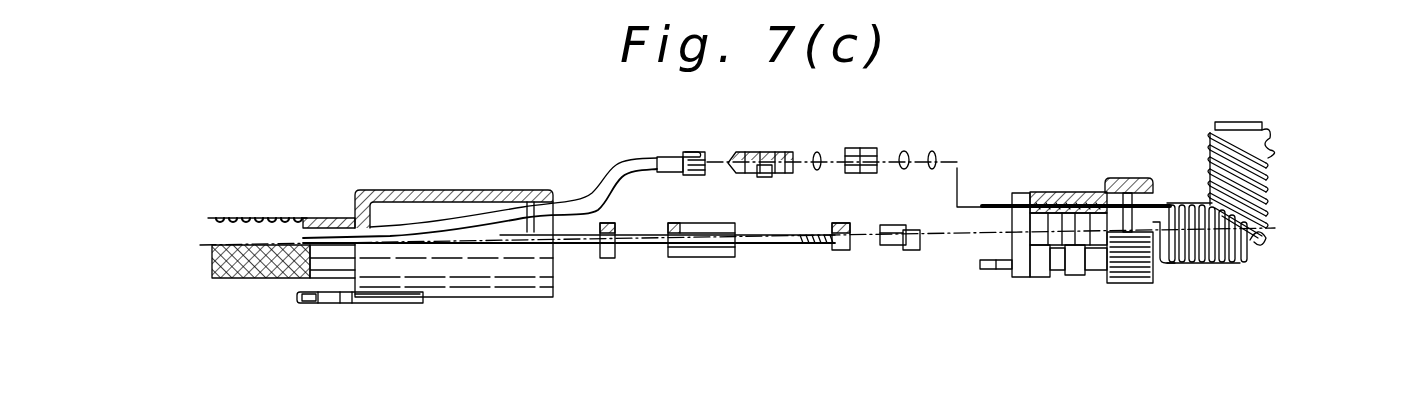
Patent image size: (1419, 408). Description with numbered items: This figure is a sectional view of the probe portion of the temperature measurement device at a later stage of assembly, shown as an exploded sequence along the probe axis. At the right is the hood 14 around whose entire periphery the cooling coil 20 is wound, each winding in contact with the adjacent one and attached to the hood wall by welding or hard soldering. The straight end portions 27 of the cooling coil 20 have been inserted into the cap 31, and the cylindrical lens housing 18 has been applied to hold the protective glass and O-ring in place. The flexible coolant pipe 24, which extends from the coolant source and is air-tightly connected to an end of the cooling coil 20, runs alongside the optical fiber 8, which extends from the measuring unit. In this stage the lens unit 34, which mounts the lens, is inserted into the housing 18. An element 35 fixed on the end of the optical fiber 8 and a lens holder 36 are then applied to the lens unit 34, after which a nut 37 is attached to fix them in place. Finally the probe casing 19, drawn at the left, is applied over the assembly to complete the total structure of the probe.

The optical fiber 8 is at (775, 251).
The hood 14 is at (1238, 121).
The cylindrical lens housing 18 is at (1028, 279).
The probe casing 19 is at (423, 293).
The cooling coil 20 is at (1272, 158).
The flexible coolant pipe 24 is at (598, 182).
The straight end portion of the cooling coil 27 is at (987, 198).
The cap 31 is at (1127, 283).
The lens unit 34 is at (910, 251).
The element fixed on the end of the optical fiber 35 is at (838, 251).
The lens holder 36 is at (700, 258).
The nut 37 is at (608, 258).